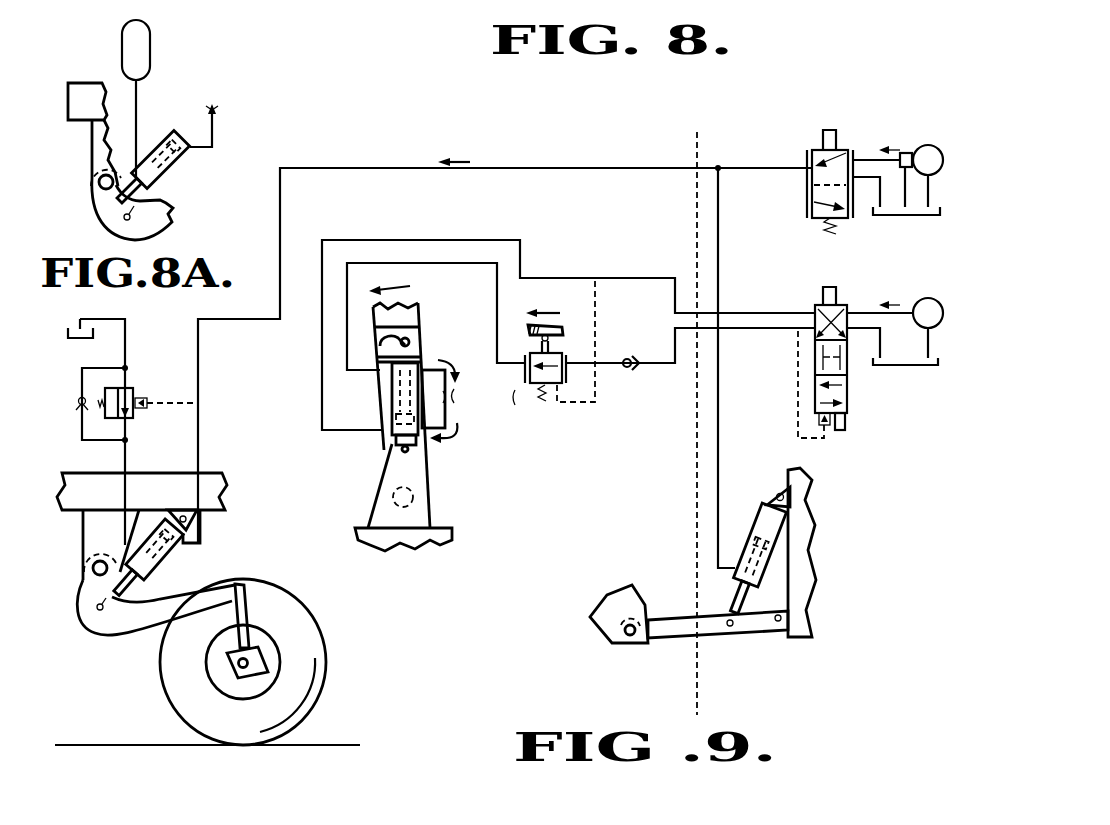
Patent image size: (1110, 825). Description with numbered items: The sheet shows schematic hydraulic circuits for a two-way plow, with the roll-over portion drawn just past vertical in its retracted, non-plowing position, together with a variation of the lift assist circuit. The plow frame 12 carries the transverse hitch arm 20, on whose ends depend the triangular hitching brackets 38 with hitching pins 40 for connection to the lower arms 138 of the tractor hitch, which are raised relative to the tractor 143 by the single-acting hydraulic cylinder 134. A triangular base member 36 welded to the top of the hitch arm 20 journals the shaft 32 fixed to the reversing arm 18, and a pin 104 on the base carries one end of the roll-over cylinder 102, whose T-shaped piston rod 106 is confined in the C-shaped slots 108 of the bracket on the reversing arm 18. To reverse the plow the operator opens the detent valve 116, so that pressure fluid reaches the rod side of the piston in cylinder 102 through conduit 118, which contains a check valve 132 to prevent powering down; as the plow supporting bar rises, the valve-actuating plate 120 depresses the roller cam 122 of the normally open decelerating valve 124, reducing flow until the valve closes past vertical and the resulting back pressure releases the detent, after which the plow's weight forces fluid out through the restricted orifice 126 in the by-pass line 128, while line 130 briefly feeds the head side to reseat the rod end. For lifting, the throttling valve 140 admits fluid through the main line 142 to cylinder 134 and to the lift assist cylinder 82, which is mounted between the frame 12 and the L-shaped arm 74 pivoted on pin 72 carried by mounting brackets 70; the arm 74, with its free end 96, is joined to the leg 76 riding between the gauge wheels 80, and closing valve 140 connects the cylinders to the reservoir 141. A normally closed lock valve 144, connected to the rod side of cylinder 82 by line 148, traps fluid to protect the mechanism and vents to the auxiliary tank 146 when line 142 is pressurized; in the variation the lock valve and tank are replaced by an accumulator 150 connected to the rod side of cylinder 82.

In FIG. 8A, the plow frame 12 is at (85, 83).
In FIG. 9, the plow frame 12 is at (77, 473).
In FIG. 9, the reversing arm 18 is at (419, 307).
In FIG. 9, the hitch arm 20 is at (428, 543).
In FIG. 9, the journal shaft 32 is at (392, 493).
In FIG. 9, the base member 36 is at (430, 507).
In FIG. 9, the hitching bracket 38 is at (600, 625).
In FIG. 9, the hitching pin 40 is at (633, 642).
In FIG. 8A, the mounting bracket 70 is at (93, 140).
In FIG. 9, the mounting bracket 70 is at (83, 525).
In FIG. 8A, the pin 72 is at (99, 186).
In FIG. 9, the pin 72 is at (92, 568).
In FIG. 8A, the arm 74 is at (172, 214).
In FIG. 9, the arm 74 is at (112, 633).
In FIG. 9, the leg 76 is at (262, 610).
In FIG. 9, the gauge wheel 80 is at (324, 634).
In FIG. 8A, the hydraulic cylinder 82 is at (182, 163).
In FIG. 9, the hydraulic cylinder 82 is at (163, 560).
In FIG. 9, the free end 96 is at (252, 582).
In FIG. 9, the hydraulic cylinder 102 is at (392, 392).
In FIG. 9, the pin 104 is at (402, 449).
In FIG. 9, the piston rod 106 is at (410, 343).
In FIG. 9, the C-shaped slot 108 is at (397, 333).
In FIG. 9, the detent valve 116 is at (848, 393).
In FIG. 9, the conduit 118 is at (656, 366).
In FIG. 9, the valve-actuating plate 120 is at (562, 328).
In FIG. 9, the roller cam 122 is at (551, 345).
In FIG. 9, the decelerating valve 124 is at (527, 384).
In FIG. 9, the restricted orifice 126 is at (452, 398).
In FIG. 9, the by-pass line 128 is at (458, 383).
In FIG. 9, the line 130 is at (632, 277).
In FIG. 9, the check valve 132 is at (625, 372).
In FIG. 9, the hydraulic cylinder 134 is at (760, 504).
In FIG. 9, the lower arm 138 is at (745, 629).
In FIG. 9, the throttling valve 140 is at (848, 150).
In FIG. 9, the fluid reservoir 141 is at (920, 216).
In FIG. 8A, the main line 142 is at (217, 127).
In FIG. 9, the main line 142 is at (612, 168).
In FIG. 9, the tractor 143 is at (804, 526).
In FIG. 9, the lock valve 144 is at (137, 388).
In FIG. 9, the auxiliary fluid tank 146 is at (90, 333).
In FIG. 8A, the line 148 is at (137, 100).
In FIG. 9, the line 148 is at (127, 457).
In FIG. 8A, the accumulator 150 is at (151, 47).